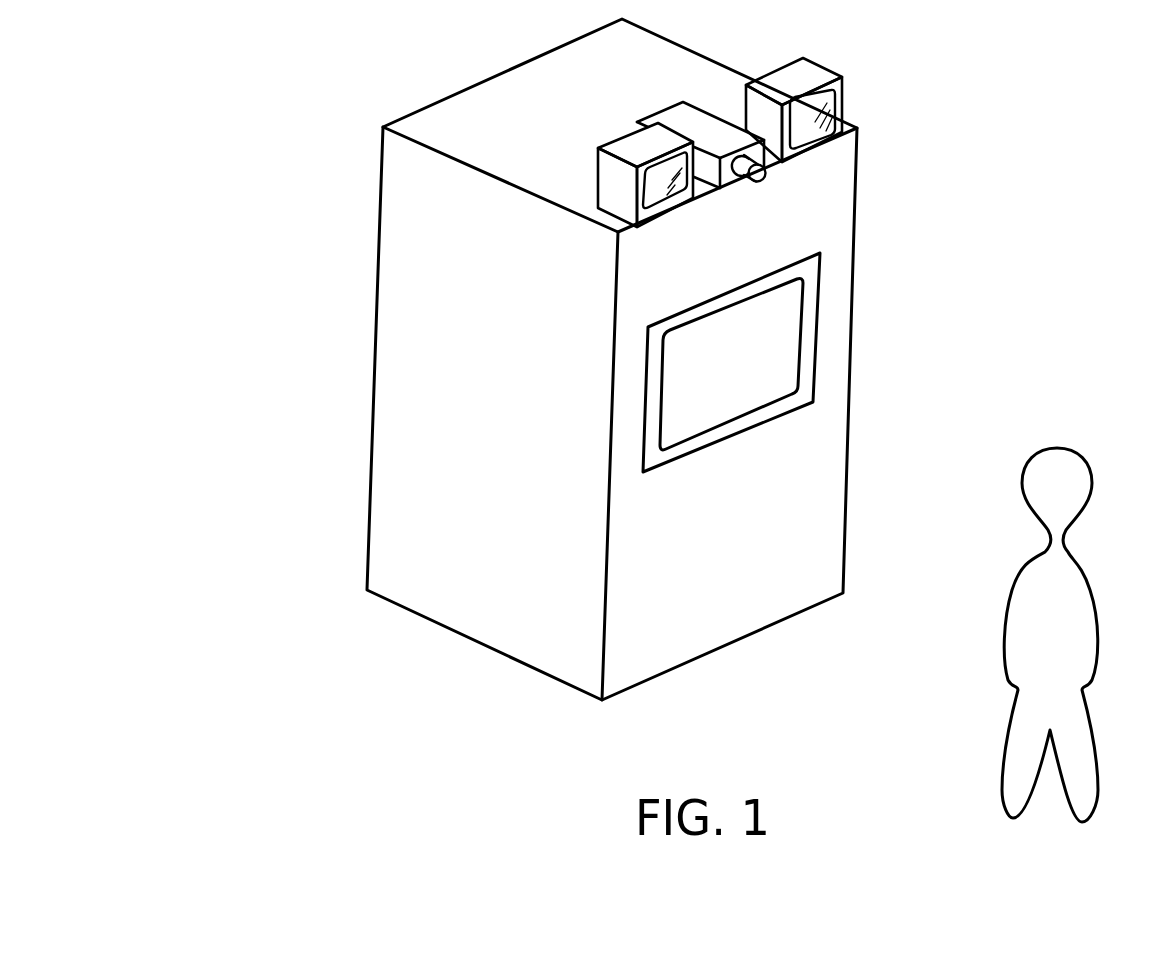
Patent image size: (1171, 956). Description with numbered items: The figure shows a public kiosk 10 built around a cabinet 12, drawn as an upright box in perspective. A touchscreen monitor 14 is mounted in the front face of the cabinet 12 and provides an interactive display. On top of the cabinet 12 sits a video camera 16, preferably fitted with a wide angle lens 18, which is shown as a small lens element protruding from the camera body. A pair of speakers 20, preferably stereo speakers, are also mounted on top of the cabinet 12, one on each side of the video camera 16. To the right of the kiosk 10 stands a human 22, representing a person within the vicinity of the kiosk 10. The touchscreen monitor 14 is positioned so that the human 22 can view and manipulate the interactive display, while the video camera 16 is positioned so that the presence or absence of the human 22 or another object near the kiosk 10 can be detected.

The public kiosk 10 is at (261, 197).
The cabinet 12 is at (397, 418).
The touchscreen monitor 14 is at (783, 352).
The video camera 16 is at (712, 125).
The wide angle lens 18 is at (764, 177).
The speakers 20 is at (630, 142).
The human 22 is at (1068, 584).